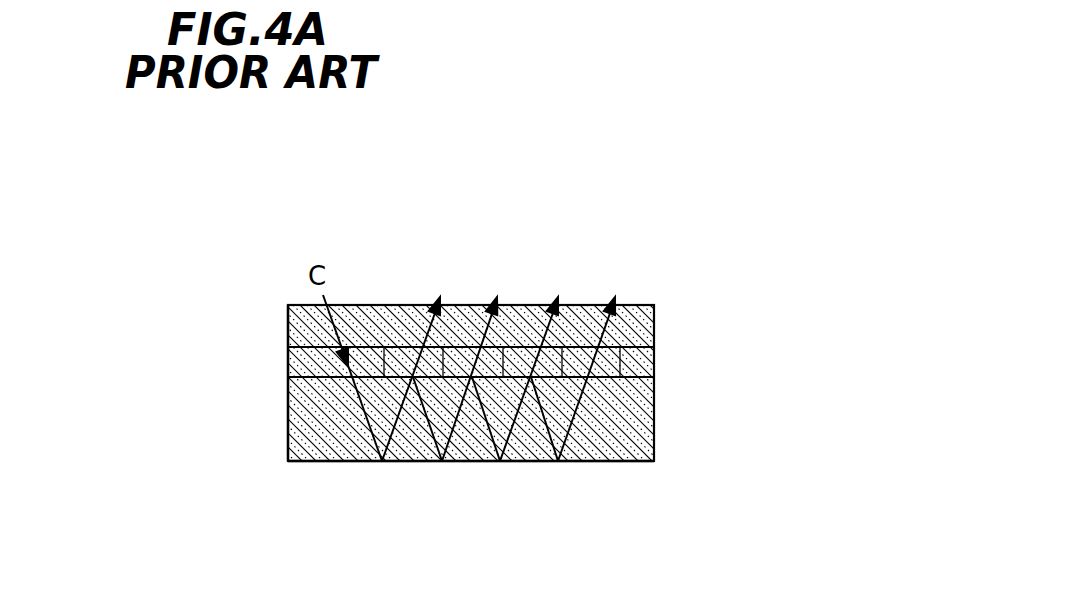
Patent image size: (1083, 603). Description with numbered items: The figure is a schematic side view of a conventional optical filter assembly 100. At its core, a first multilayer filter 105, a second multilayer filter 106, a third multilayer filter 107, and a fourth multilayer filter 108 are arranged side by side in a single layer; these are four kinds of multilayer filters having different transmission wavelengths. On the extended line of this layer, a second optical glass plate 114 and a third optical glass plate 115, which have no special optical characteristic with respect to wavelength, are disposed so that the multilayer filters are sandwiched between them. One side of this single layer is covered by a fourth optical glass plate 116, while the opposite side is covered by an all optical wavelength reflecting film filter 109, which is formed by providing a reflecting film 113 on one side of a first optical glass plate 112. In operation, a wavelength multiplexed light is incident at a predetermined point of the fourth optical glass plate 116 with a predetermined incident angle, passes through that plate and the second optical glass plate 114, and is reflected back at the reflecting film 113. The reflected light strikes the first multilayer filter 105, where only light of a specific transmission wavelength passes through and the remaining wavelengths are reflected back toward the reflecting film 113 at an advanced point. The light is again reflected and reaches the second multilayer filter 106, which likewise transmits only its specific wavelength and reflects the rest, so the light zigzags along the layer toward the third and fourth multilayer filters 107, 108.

The optical filter assembly 100 is at (626, 189).
The first multilayer filter 105 is at (397, 362).
The second multilayer filter 106 is at (460, 358).
The third multilayer filter 107 is at (528, 357).
The fourth multilayer filter 108 is at (585, 360).
The all optical wavelength reflecting film filter 109 is at (65, 528).
The first optical glass plate 112 is at (633, 405).
The reflecting film 113 is at (590, 461).
The second optical glass plate 114 is at (303, 358).
The third optical glass plate 115 is at (638, 362).
The fourth optical glass plate 116 is at (303, 334).